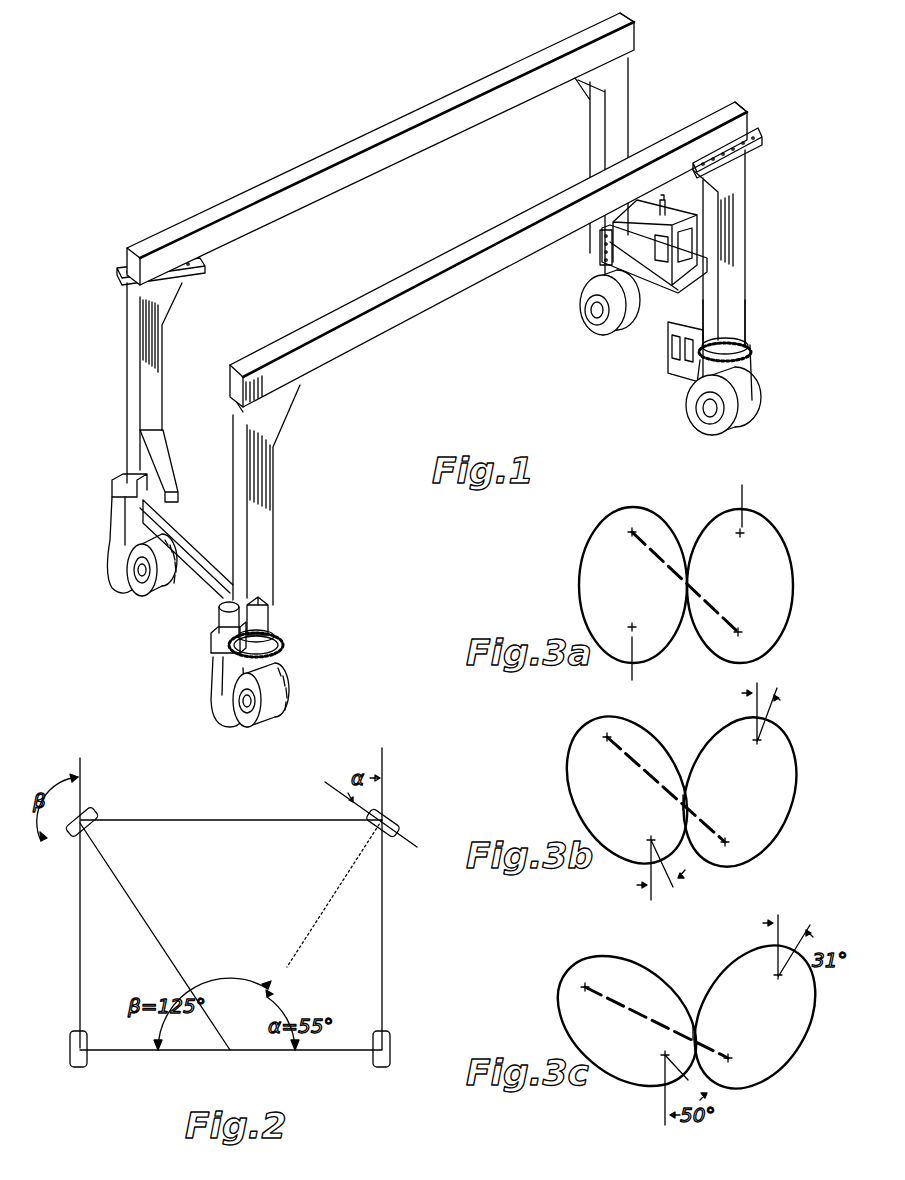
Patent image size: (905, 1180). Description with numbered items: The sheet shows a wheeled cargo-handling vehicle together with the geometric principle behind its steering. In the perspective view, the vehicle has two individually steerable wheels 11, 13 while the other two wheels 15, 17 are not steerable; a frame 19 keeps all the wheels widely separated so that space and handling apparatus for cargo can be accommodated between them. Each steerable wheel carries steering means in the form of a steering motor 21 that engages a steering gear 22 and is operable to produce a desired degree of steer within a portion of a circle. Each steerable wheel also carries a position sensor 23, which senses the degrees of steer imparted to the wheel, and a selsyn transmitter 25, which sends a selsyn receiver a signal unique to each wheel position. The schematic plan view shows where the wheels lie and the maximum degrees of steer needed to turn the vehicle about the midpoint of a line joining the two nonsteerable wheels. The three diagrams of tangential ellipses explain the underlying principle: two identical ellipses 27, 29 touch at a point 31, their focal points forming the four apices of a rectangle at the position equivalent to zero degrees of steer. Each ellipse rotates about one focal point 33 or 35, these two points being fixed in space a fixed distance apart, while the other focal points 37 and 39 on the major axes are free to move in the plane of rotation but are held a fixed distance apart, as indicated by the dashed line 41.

In FIG. 1, the steerable wheel 11 is at (282, 712).
In FIG. 1, the steerable wheel 13 is at (705, 423).
In FIG. 1, the nonsteerable wheel 15 is at (150, 597).
In FIG. 1, the nonsteerable wheel 17 is at (580, 288).
In FIG. 1, the frame 19 is at (627, 33).
In FIG. 1, the steering motor 21 is at (213, 623).
In FIG. 1, the steering gear 22 is at (273, 623).
In FIG. 1, the position sensor 23 is at (267, 652).
In FIG. 1, the selsyn transmitter 25 is at (273, 643).
In FIG. 3A, the ellipse 27 is at (792, 575).
In FIG. 3B, the ellipse 27 is at (798, 790).
In FIG. 3C, the ellipse 27 is at (815, 1030).
In FIG. 3A, the ellipse 29 is at (578, 583).
In FIG. 3B, the ellipse 29 is at (572, 780).
In FIG. 3C, the ellipse 29 is at (558, 1007).
In FIG. 3A, the point of tangency 31 is at (685, 585).
In FIG. 3B, the point of tangency 31 is at (708, 789).
In FIG. 3C, the point of tangency 31 is at (693, 1017).
In FIG. 3A, the focal point 33 is at (742, 533).
In FIG. 3B, the focal point 33 is at (752, 720).
In FIG. 3A, the focal point 35 is at (635, 630).
In FIG. 3B, the focal point 35 is at (647, 843).
In FIG. 3A, the focal point 37 is at (632, 532).
In FIG. 3A, the focal point 39 is at (740, 630).
In FIG. 3A, the dashed line 41 is at (658, 552).
In FIG. 3B, the dashed line 41 is at (657, 777).
In FIG. 3C, the dashed line 41 is at (656, 1022).